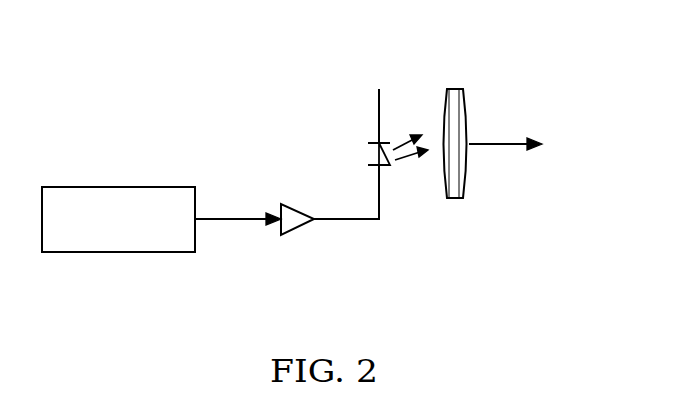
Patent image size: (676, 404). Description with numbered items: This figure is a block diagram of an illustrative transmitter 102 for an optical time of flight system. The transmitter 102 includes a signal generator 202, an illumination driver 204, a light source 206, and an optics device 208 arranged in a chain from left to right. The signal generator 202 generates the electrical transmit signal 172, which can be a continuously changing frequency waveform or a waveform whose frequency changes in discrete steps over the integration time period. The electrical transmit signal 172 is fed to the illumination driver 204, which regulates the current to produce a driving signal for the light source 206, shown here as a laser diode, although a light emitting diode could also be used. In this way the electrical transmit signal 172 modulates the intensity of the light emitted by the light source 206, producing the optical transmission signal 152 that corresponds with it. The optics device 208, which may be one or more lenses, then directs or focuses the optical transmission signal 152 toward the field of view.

The transmitter 102 is at (207, 122).
The signal generator 202 is at (118, 253).
The electrical transmit signal 172 is at (240, 221).
The illumination driver 204 is at (298, 229).
The light source 206 is at (367, 149).
The optics device 208 is at (453, 88).
The optical transmission signal 152 is at (498, 142).